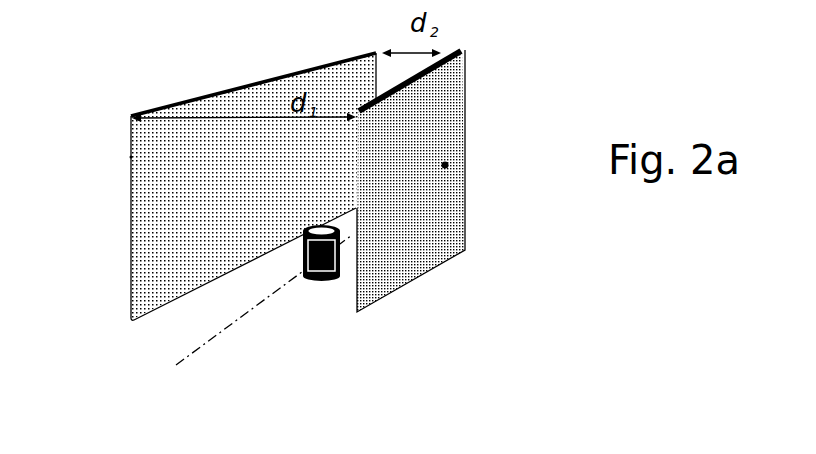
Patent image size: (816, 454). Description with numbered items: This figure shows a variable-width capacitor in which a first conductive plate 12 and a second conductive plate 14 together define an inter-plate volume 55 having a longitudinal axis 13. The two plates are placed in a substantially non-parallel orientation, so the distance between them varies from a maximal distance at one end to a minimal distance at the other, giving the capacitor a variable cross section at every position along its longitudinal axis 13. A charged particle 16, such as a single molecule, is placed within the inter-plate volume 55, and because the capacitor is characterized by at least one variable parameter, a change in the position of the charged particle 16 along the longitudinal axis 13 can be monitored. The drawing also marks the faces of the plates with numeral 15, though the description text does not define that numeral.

The first conductive plate 12 is at (259, 74).
The longitudinal axis 13 is at (264, 300).
The second conductive plate 14 is at (441, 102).
The plate surface 15 is at (131, 157).
The charged particle 16 is at (331, 288).
The inter-plate volume 55 is at (297, 153).